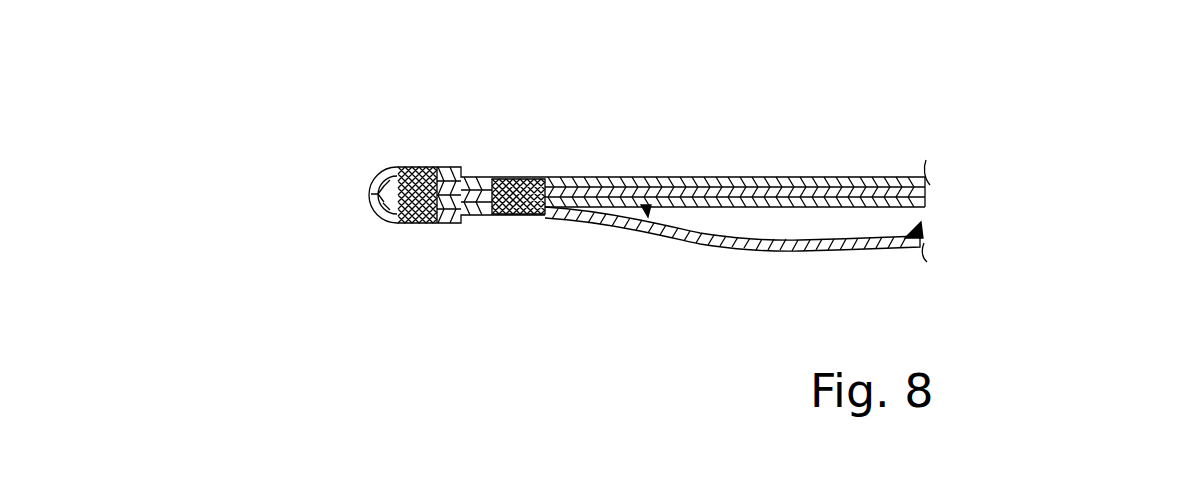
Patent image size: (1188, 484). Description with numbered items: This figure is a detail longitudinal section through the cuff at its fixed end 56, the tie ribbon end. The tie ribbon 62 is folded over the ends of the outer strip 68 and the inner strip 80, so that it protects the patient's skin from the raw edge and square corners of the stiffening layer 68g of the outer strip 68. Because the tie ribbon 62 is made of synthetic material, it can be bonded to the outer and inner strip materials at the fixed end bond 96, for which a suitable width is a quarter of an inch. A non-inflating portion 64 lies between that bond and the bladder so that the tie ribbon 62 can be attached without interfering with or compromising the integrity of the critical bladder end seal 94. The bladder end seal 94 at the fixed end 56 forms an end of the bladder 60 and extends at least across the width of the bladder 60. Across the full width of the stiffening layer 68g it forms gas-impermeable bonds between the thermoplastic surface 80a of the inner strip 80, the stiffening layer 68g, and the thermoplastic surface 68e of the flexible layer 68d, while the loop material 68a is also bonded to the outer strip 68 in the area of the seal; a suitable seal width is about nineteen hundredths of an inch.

The fixed end 56 is at (306, 225).
The bladder 60 is at (840, 239).
The tie ribbon 62 is at (453, 167).
The non-inflating portion 64 is at (490, 278).
The outer strip 68 is at (1060, 105).
The loop material 68a is at (936, 183).
The flexible layer 68d is at (936, 195).
The thermoplastic surface 68e is at (642, 223).
The stiffening layer 68g is at (936, 207).
The inner strip 80 is at (735, 239).
The thermoplastic surface 80a is at (928, 244).
The bladder end seal 94 is at (520, 177).
The fixed end bond 96 is at (425, 167).